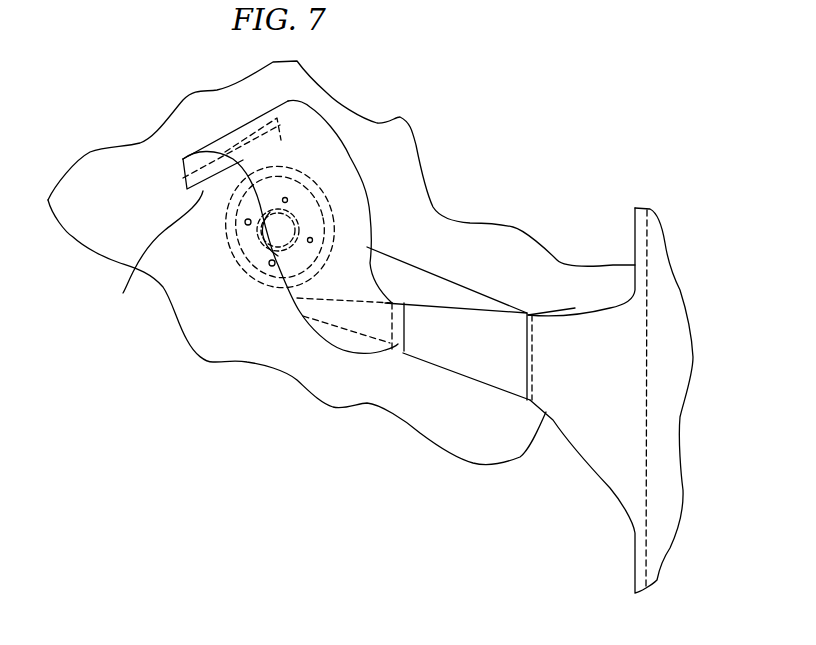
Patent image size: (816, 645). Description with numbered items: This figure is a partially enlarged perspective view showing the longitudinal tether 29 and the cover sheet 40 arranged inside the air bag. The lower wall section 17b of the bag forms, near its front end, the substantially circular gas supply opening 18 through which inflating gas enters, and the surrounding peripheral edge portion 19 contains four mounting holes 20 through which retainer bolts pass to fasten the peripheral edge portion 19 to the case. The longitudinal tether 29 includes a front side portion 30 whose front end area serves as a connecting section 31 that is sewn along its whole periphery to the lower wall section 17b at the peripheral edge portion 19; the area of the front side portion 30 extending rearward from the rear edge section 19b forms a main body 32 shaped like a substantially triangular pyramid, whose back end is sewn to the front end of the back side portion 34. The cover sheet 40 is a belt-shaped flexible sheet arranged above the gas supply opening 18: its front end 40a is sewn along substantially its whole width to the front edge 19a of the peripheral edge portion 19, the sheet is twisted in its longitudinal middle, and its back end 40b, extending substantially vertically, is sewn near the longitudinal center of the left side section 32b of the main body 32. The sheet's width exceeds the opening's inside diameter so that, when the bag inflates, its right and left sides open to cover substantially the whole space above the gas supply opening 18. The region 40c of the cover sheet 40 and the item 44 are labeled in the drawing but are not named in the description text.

The cover sheet 40 is at (340, 122).
The front end of the cover sheet 40a is at (192, 168).
The back end of the cover sheet 40b is at (412, 357).
The mounting face of bracket 40c is at (340, 163).
The front side portion 30 is at (431, 258).
The main body 32 is at (457, 297).
The left side section 32b is at (433, 350).
The longitudinal tether 29 is at (561, 277).
The back side portion 34 is at (587, 465).
The peripheral edge portion 19 is at (258, 243).
The front edge of the peripheral edge 19a is at (153, 257).
The rear edge section of the peripheral edge 19b is at (287, 291).
The mounting holes 20 is at (247, 223).
The gas supply opening 18 is at (263, 248).
The connecting section 31 is at (262, 280).
The lower wall section 17b is at (218, 335).
The member 44 (43) 44 is at (600, 2).